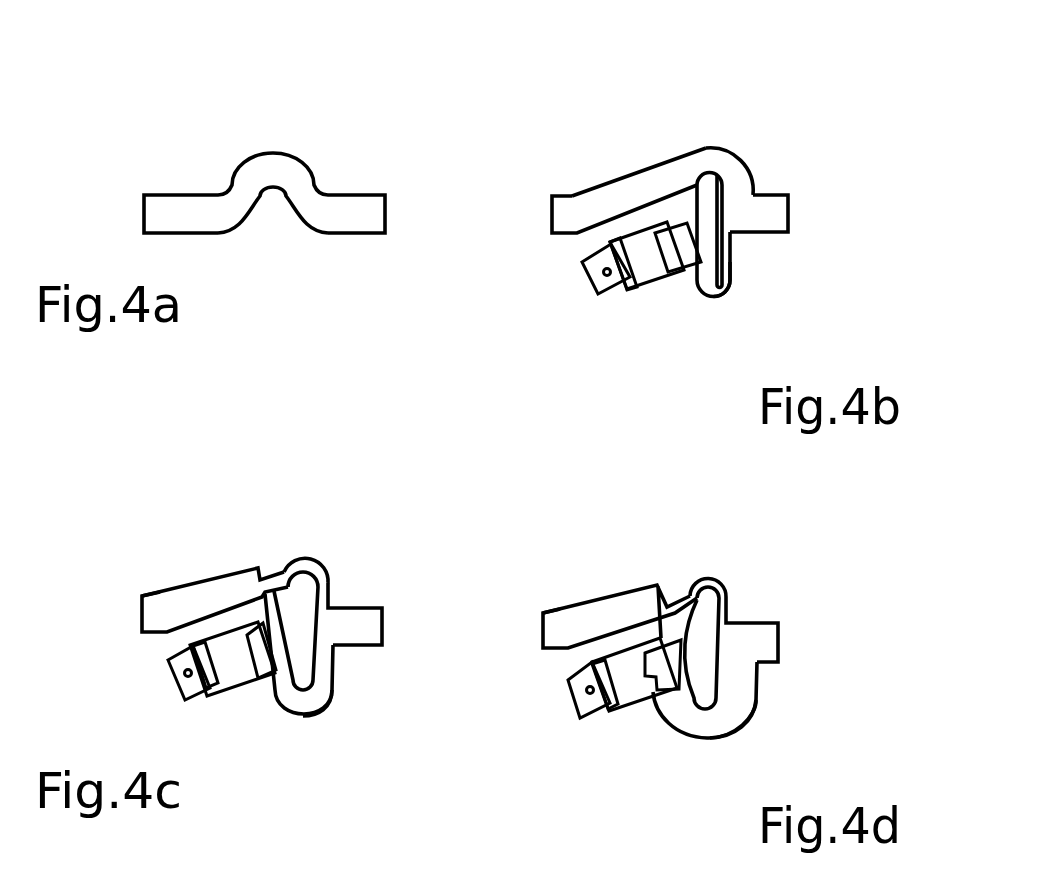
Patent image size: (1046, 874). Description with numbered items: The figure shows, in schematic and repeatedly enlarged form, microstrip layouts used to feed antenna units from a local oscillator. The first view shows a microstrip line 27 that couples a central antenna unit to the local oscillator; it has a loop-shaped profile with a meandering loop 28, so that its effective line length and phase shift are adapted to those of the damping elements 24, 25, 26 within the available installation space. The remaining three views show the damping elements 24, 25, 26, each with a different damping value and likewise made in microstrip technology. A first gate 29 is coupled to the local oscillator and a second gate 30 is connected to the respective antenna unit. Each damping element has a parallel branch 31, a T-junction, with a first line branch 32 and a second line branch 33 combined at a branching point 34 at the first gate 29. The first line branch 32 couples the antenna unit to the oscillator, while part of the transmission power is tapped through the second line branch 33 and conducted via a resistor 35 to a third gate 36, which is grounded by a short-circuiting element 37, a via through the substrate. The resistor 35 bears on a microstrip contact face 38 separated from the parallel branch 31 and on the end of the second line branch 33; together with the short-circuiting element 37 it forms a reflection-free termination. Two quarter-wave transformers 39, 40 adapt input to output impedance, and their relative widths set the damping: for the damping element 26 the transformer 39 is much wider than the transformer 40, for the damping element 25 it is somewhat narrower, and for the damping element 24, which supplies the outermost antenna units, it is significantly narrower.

In FIG. 4d, the damping element 24 is at (790, 560).
In FIG. 4c, the damping element 25 is at (372, 547).
In FIG. 4b, the damping element 26 is at (797, 162).
In FIG. 4a, the microstrip line 27 is at (192, 204).
In FIG. 4a, the meandering loop 28 is at (293, 157).
In FIG. 4b, the first gate 29 is at (788, 213).
In FIG. 4c, the first gate 29 is at (382, 613).
In FIG. 4d, the first gate 29 is at (778, 638).
In FIG. 4b, the second gate 30 is at (552, 213).
In FIG. 4c, the second gate 30 is at (142, 614).
In FIG. 4d, the second gate 30 is at (543, 640).
In FIG. 4b, the parallel branch 31 is at (749, 260).
In FIG. 4c, the parallel branch 31 is at (352, 588).
In FIG. 4d, the parallel branch 31 is at (752, 613).
In FIG. 4b, the first line branch 32 is at (710, 148).
In FIG. 4c, the first line branch 32 is at (280, 570).
In FIG. 4d, the first line branch 32 is at (693, 580).
In FIG. 4b, the second line branch 33 is at (698, 295).
In FIG. 4c, the second line branch 33 is at (280, 712).
In FIG. 4d, the second line branch 33 is at (665, 730).
In FIG. 4b, the branching point 34 is at (725, 220).
In FIG. 4c, the branching point 34 is at (318, 625).
In FIG. 4d, the branching point 34 is at (720, 657).
In FIG. 4b, the resistor 35 is at (607, 243).
In FIG. 4c, the resistor 35 is at (190, 650).
In FIG. 4d, the resistor 35 is at (592, 665).
In FIG. 4b, the third gate 36 is at (590, 283).
In FIG. 4c, the third gate 36 is at (172, 690).
In FIG. 4d, the third gate 36 is at (583, 700).
In FIG. 4b, the short-circuiting element 37 is at (607, 276).
In FIG. 4c, the short-circuiting element 37 is at (188, 677).
In FIG. 4d, the short-circuiting element 37 is at (592, 694).
In FIG. 4b, the microstrip contact face 38 is at (585, 263).
In FIG. 4c, the microstrip contact face 38 is at (168, 662).
In FIG. 4d, the microstrip contact face 38 is at (576, 688).
In FIG. 4b, the λ/4 transformer 39 is at (743, 152).
In FIG. 4c, the λ/4 transformer 39 is at (314, 560).
In FIG. 4d, the λ/4 transformer 39 is at (714, 580).
In FIG. 4b, the λ/4 transformer 40 is at (726, 296).
In FIG. 4c, the λ/4 transformer 40 is at (333, 700).
In FIG. 4d, the λ/4 transformer 40 is at (750, 714).